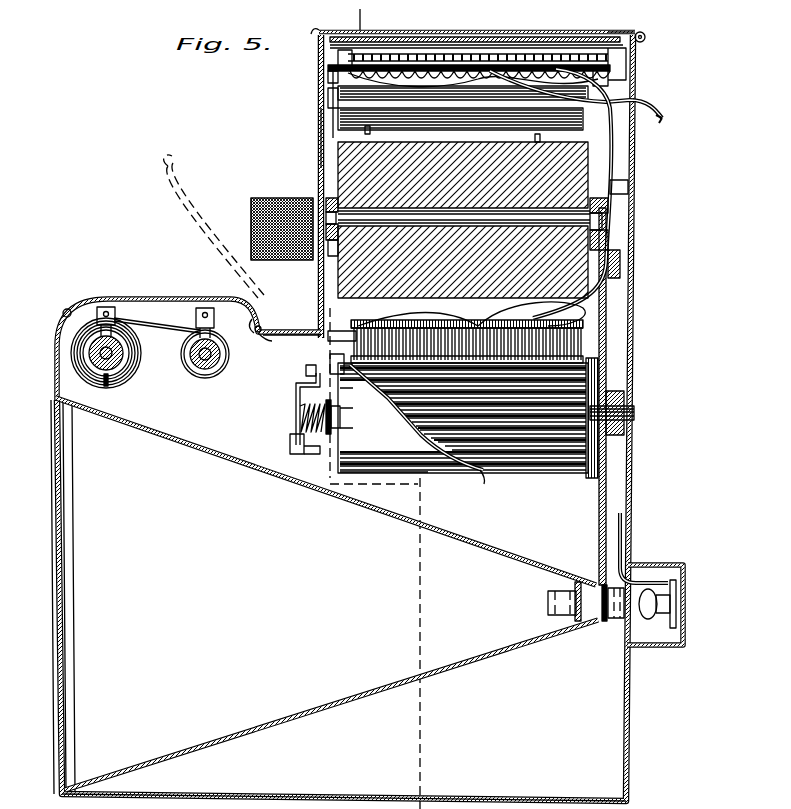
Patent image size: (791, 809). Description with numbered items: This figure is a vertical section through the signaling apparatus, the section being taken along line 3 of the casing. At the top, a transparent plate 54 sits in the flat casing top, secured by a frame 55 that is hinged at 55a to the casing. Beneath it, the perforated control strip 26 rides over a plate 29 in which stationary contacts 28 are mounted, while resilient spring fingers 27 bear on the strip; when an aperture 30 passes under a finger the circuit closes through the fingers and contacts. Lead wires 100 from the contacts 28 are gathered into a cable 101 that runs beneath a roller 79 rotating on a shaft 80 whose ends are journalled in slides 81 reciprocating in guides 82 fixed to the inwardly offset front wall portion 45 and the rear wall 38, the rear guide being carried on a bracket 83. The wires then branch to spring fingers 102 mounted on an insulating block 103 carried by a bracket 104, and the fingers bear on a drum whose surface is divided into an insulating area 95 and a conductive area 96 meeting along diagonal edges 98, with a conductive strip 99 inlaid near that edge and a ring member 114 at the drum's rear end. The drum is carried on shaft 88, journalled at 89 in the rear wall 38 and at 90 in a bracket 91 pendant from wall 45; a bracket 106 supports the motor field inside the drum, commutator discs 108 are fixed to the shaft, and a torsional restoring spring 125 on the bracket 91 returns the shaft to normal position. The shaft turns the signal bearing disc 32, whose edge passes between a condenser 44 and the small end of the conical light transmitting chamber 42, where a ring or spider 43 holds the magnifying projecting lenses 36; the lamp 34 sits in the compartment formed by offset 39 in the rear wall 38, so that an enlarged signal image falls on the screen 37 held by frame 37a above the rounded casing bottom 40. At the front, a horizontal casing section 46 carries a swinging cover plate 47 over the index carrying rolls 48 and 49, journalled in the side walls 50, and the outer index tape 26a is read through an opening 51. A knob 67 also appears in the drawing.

The section line 3 is at (367, 19).
The transparent plate 54 is at (520, 26).
The frame 55 is at (621, 24).
The hinge 55a is at (638, 27).
The spring fingers 27 is at (328, 48).
The plate 29 is at (603, 60).
The stationary contacts 28 is at (320, 69).
The lead wires 100 is at (328, 89).
The perforated control strip 26 is at (578, 112).
The inwardly offset portion 45 is at (311, 129).
The aperture 30 is at (364, 122).
The cable 101 is at (603, 152).
The knob 67 is at (243, 196).
The slides 81 is at (316, 196).
The bracket 83 is at (622, 188).
The shaft 80 is at (464, 220).
The guides 82 is at (314, 249).
The swinging cover plate 47 is at (135, 291).
The opening 51 is at (53, 325).
The side walls 50 is at (250, 315).
The horizontal casing section 46 is at (268, 323).
The bracket 104 is at (332, 325).
The roller 79 is at (410, 290).
The block of insulating material 103 is at (577, 330).
The outer index tape 26a is at (148, 317).
The bracket 106 is at (322, 357).
The spring fingers 102 is at (577, 349).
The rear wall 38 is at (627, 366).
The index carrying roll 48 is at (109, 382).
The index carrying roll 49 is at (195, 368).
The bracket 91 is at (288, 380).
The shaft 88 is at (618, 401).
The commutator discs 108 is at (319, 395).
The torsional restoring spring 125 is at (291, 401).
The journal 89 is at (618, 409).
The journal 90 is at (286, 431).
The conductive area 96 is at (364, 455).
The diagonal abutting edges 98 is at (431, 460).
The conductive strip 99 is at (474, 466).
The insulating area 95 is at (532, 462).
The signal bearing disc 32 is at (600, 472).
The ring member 114 is at (583, 471).
The conical light transmitting chamber 42 is at (326, 491).
The screen 37 is at (63, 562).
The ring or spider 43 is at (565, 580).
The offset 39 is at (640, 556).
The light source 34 is at (646, 598).
The magnifying projecting lenses 36 is at (562, 608).
The condenser 44 is at (604, 612).
The frame 37a is at (58, 776).
The casing bottom 40 is at (283, 786).